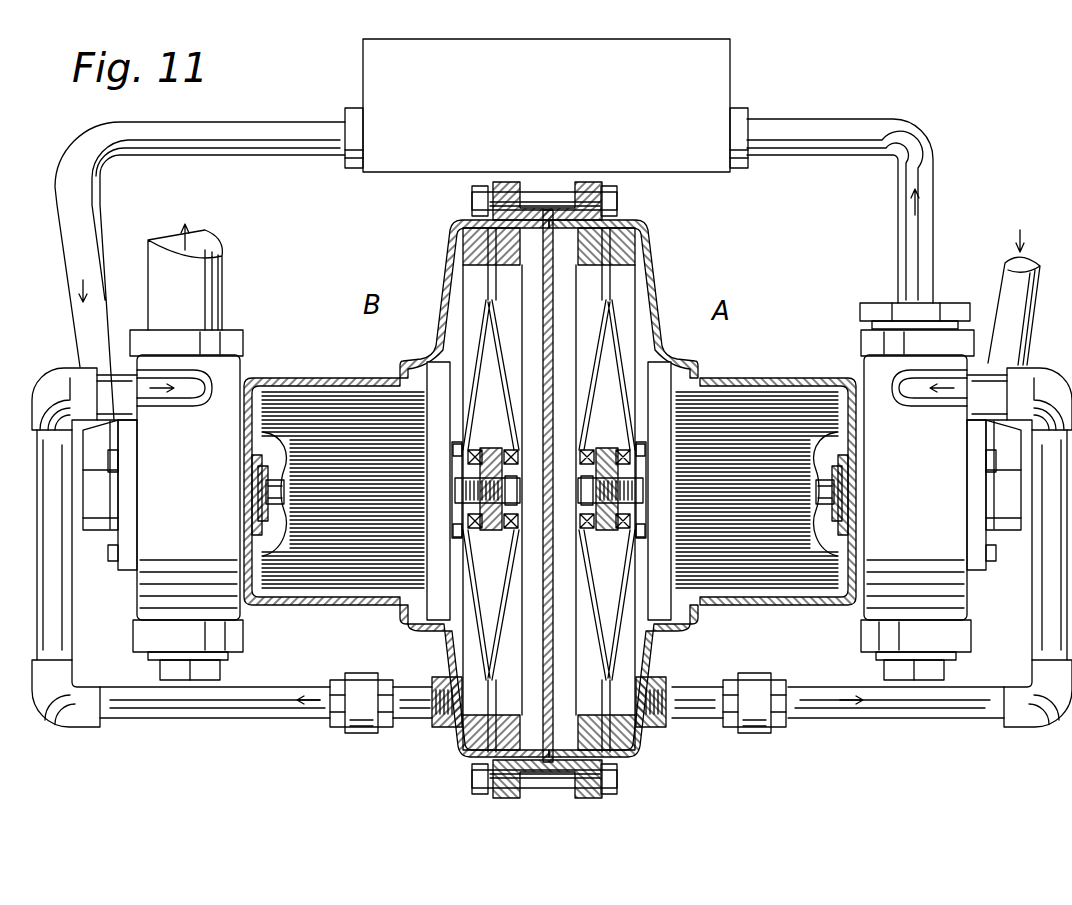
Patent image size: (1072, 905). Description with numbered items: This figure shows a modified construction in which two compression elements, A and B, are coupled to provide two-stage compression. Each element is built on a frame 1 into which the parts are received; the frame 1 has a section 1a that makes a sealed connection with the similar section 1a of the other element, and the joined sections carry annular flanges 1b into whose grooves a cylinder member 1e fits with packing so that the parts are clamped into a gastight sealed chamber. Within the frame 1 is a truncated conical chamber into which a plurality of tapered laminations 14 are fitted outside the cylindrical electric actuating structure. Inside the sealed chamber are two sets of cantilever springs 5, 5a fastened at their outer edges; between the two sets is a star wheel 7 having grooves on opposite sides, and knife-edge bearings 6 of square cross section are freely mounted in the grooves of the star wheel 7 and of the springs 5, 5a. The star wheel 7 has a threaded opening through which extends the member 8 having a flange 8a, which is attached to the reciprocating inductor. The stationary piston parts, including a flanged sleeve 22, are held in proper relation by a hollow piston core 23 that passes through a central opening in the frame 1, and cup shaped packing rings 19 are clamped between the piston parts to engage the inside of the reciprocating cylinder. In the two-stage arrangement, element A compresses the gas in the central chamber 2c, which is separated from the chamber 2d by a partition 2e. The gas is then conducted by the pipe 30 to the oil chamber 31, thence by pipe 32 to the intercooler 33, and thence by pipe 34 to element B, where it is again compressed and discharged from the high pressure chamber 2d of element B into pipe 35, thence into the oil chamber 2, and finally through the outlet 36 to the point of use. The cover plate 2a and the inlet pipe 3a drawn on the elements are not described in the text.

The frame 1 is at (727, 377).
The section 1a is at (668, 288).
The annular flanges 1b is at (592, 182).
The cylinder member 1e is at (567, 770).
The oil chamber 2 is at (150, 572).
The pump cover plate 2a is at (1008, 535).
The central chamber 2c is at (645, 647).
The high pressure chamber 2d is at (457, 640).
The partition 2e is at (553, 297).
The inlet pipe 3a is at (1033, 307).
The cantilever springs 5 is at (592, 362).
The cantilever springs 5a is at (613, 343).
The knife-edge bearings 6 is at (600, 447).
The star wheel 7 is at (582, 500).
The member 8 is at (578, 482).
The flange 8a is at (648, 440).
The tapered laminations 14 is at (762, 395).
The packing rings 19 is at (545, 788).
The flanged sleeve 22 is at (823, 487).
The hollow piston core 23 is at (845, 488).
The pipe 30 is at (975, 717).
The oil chamber 31 is at (953, 583).
The pipe 32 is at (847, 127).
The intercooler 33 is at (730, 72).
The pipe 34 is at (263, 128).
The pipe 35 is at (273, 718).
The outlet 36 is at (228, 278).